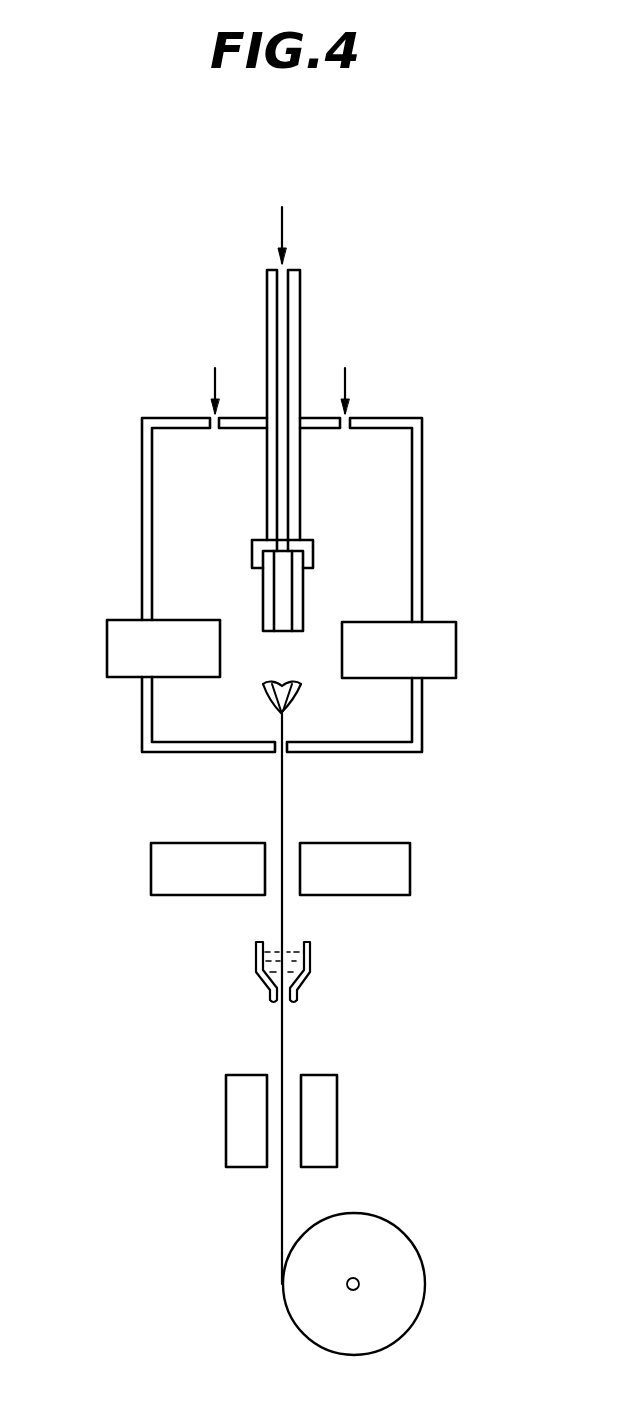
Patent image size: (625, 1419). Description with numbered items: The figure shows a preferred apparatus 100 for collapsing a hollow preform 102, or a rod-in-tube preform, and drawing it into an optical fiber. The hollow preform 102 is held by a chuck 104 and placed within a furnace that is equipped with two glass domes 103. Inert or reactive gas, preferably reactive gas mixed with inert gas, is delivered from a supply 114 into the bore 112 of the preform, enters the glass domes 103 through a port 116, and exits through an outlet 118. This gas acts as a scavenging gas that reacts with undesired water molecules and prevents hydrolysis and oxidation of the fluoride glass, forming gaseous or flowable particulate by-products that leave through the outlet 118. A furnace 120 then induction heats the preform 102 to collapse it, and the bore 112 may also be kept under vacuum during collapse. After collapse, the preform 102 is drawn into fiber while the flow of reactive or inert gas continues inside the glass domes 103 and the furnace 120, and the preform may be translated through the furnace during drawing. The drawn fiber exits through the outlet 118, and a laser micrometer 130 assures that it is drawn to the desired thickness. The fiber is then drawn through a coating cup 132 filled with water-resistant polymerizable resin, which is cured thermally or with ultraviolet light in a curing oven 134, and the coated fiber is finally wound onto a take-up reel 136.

The apparatus 100 is at (493, 608).
The hollow preform 102 is at (263, 592).
The glass domes 103 is at (142, 522).
The chuck 104 is at (298, 497).
The bore 112 is at (283, 590).
The supply 114 is at (284, 224).
The port 116 is at (213, 386).
The outlet 118 is at (275, 754).
The furnace 120 is at (111, 653).
The laser micrometer 130 is at (153, 865).
The coating cup 132 is at (253, 967).
The curing oven 134 is at (235, 1123).
The take-up reel 136 is at (412, 1303).